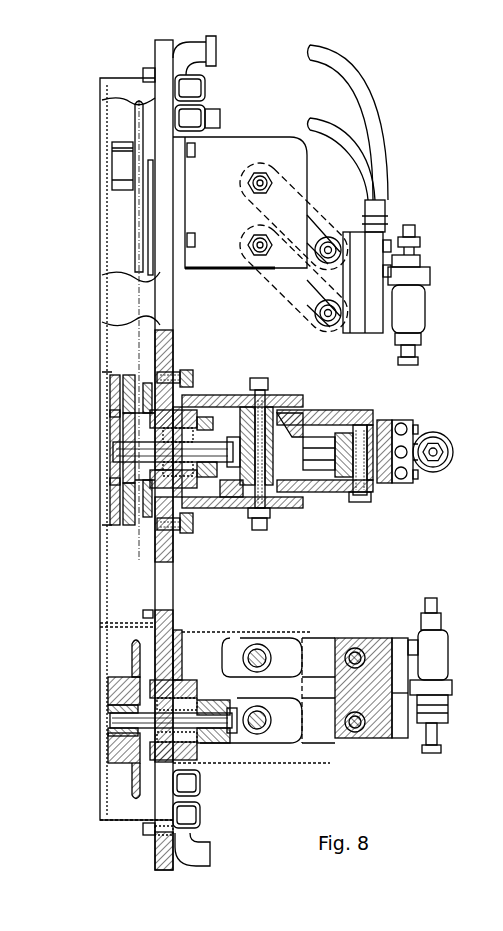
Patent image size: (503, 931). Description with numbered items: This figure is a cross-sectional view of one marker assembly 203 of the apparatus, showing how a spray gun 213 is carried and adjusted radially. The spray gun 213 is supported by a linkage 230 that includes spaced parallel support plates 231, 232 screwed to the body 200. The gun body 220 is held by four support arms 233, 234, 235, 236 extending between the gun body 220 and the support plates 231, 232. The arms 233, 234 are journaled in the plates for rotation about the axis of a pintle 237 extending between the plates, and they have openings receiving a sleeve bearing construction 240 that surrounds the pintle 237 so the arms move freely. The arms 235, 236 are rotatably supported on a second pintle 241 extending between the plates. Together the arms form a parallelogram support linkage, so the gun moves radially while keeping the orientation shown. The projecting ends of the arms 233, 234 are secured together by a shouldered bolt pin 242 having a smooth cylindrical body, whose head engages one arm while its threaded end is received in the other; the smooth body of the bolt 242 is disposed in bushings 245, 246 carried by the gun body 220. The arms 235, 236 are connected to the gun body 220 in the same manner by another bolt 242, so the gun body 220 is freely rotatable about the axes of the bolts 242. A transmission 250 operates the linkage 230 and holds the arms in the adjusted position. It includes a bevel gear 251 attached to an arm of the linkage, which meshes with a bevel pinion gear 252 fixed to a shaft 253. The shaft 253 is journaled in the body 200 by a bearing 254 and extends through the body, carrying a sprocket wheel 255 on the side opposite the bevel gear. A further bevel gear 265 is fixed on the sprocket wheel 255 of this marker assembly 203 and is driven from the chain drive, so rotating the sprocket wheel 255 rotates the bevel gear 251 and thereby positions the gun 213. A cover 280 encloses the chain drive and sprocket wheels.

The body 200 is at (158, 602).
The marker assembly 203 is at (262, 533).
The spray gun 213 is at (426, 290).
The gun body 220 is at (322, 327).
The linkage 230 is at (324, 507).
The support plate 231 is at (204, 394).
The support plate 232 is at (212, 532).
The support arm 233 is at (302, 222).
The support arm 234 is at (312, 235).
The support arm 235 is at (272, 291).
The support arm 236 is at (295, 302).
The pintle 237 is at (272, 382).
The sleeve bearing construction 240 is at (280, 458).
The pintle 241 is at (254, 644).
The shouldered bolt pin 242 is at (372, 488).
The bushing 245 is at (342, 471).
The bushing 246 is at (344, 426).
The transmission 250 is at (110, 718).
The bevel gear 251 is at (280, 404).
The bevel pinion gear 252 is at (228, 498).
The shaft 253 is at (132, 722).
The bearing 254 is at (150, 522).
The sprocket wheel 255 is at (118, 516).
The bevel gear 265 is at (112, 376).
The cover 280 is at (102, 786).